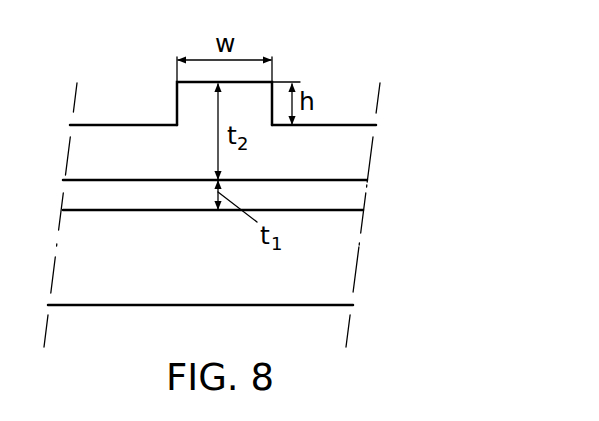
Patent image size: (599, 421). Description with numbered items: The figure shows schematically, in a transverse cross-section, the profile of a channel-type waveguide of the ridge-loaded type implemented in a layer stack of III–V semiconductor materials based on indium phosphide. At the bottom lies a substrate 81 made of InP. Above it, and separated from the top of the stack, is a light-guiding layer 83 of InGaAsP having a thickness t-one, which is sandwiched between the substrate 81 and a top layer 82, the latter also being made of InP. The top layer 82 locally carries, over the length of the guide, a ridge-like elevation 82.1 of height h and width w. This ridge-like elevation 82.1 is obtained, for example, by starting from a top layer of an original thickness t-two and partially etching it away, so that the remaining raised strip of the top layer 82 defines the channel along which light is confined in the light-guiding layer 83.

The substrate 81 is at (340, 253).
The top layer 82 is at (350, 158).
The ridge-like elevation 82.1 is at (188, 107).
The light-guiding layer 83 is at (352, 193).